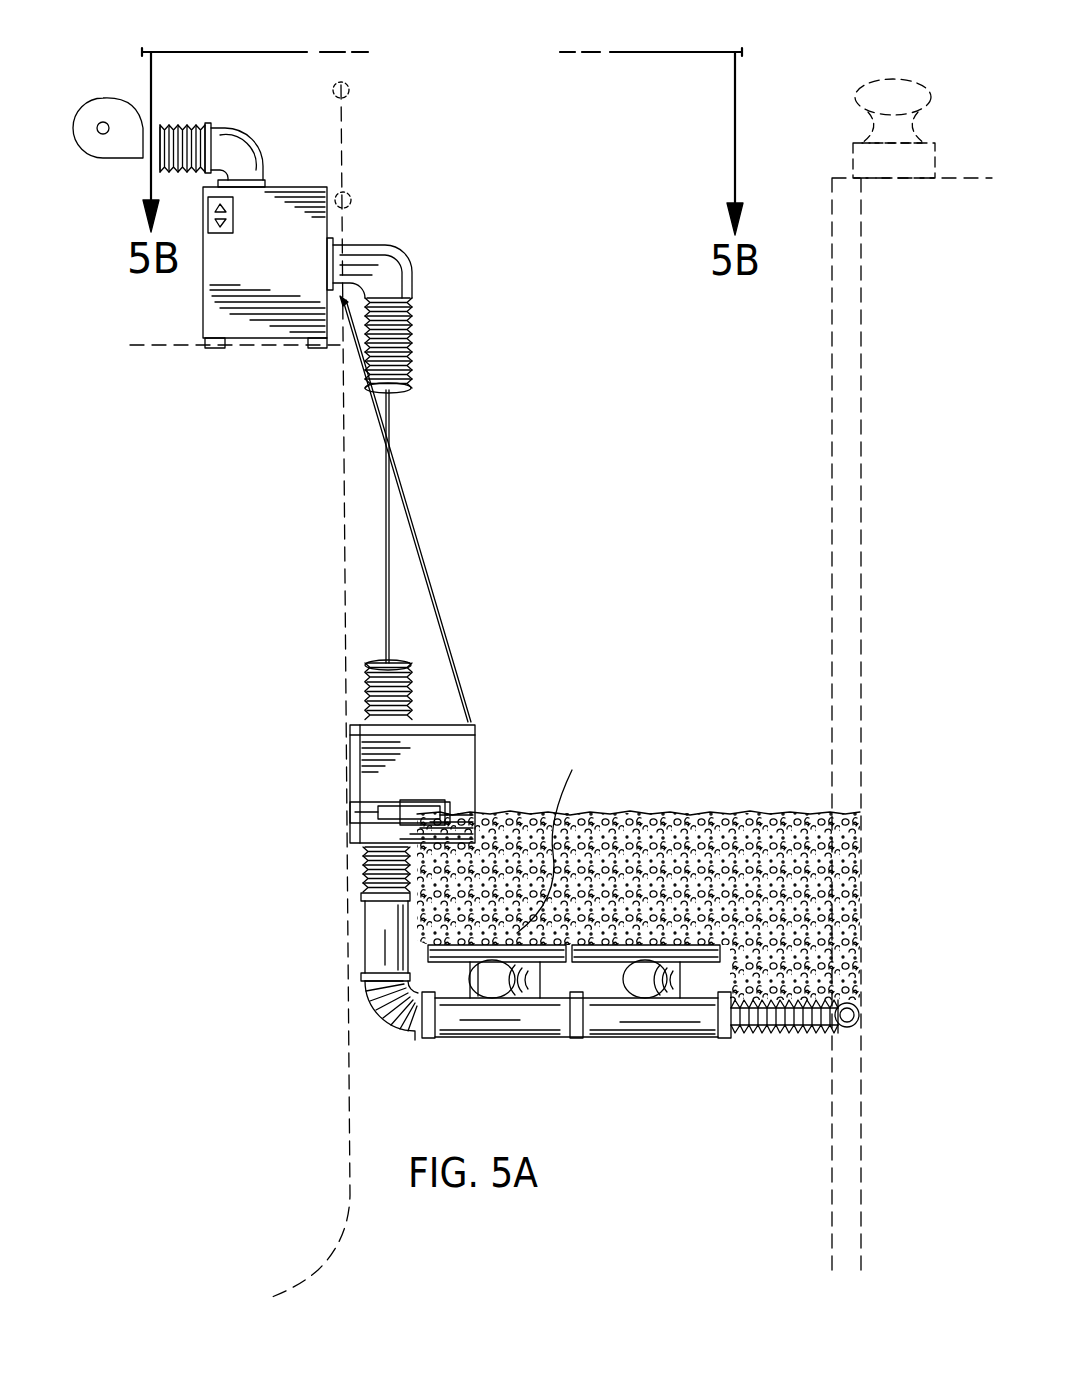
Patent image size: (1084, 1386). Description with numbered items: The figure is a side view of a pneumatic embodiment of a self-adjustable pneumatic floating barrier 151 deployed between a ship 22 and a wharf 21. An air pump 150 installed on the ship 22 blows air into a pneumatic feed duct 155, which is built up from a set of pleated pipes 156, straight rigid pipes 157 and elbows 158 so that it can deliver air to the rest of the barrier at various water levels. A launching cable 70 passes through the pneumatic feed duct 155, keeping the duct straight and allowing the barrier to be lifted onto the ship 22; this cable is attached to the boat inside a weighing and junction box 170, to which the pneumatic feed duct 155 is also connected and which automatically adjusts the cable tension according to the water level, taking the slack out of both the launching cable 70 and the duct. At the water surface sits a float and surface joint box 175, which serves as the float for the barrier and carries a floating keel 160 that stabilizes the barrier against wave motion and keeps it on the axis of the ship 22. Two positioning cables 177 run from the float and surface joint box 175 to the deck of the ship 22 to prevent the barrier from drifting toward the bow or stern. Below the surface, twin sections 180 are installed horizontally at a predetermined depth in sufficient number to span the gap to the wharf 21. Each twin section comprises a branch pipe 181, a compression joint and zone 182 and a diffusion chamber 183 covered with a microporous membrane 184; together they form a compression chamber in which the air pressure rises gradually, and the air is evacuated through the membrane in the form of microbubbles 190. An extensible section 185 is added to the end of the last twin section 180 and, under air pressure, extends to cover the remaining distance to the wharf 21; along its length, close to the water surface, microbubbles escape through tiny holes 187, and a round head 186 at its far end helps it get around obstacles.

The air pump 150 is at (83, 107).
The weighing and junction box 170 is at (255, 287).
The elbows 158 is at (357, 243).
The pneumatic feed duct 155 is at (385, 288).
The launching cable 70 is at (390, 412).
The positioning cables 177 is at (418, 543).
The ship 22 is at (290, 440).
The wharf 21 is at (855, 433).
The pleated pipes 156 is at (410, 692).
The float and surface joint box 175 is at (463, 748).
The floating keel 160 is at (355, 815).
The straight rigid pipes 157 is at (378, 933).
The self-adjustable pneumatic floating barrier 151 is at (677, 815).
The microbubbles 190 is at (570, 845).
The diffusion chamber 183 is at (532, 962).
The twin sections 180 is at (513, 1023).
The microporous membrane 184 is at (473, 1000).
The compression joint and zone 182 is at (493, 993).
The branch pipe 181 is at (657, 1020).
The extensible section 185 is at (747, 1030).
The round head 186 is at (833, 1027).
The tiny holes 187 is at (848, 988).